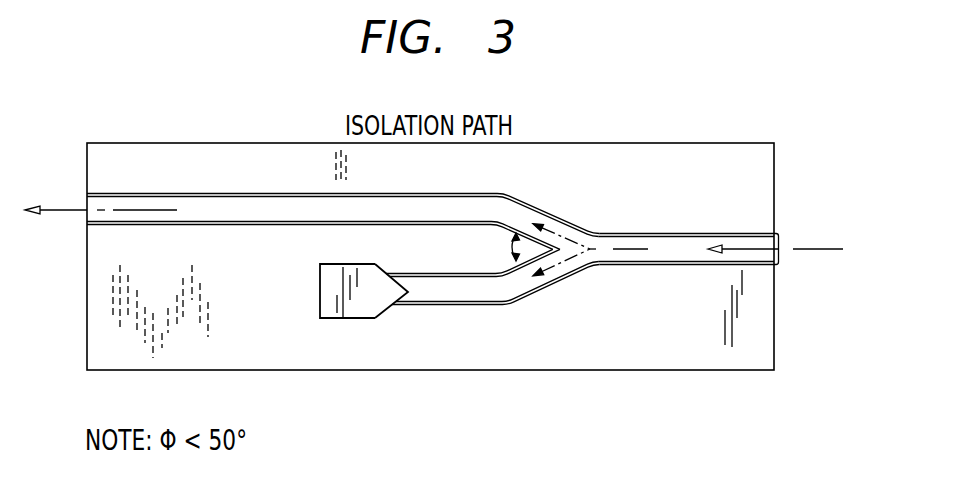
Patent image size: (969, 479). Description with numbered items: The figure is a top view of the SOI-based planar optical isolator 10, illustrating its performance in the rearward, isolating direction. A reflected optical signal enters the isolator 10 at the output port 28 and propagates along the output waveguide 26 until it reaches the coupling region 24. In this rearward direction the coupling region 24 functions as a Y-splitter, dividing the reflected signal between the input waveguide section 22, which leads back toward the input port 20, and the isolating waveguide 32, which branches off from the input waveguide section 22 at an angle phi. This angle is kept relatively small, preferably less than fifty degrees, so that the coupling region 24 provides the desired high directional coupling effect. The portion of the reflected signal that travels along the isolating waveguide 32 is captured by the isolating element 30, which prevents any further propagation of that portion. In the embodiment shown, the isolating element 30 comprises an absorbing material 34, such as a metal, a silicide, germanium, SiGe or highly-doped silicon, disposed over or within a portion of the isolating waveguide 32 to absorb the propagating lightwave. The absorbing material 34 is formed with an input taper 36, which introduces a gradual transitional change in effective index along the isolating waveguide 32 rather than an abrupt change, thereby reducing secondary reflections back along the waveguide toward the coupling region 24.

The optical isolator 10 is at (772, 103).
The input port 20 is at (60, 213).
The input waveguide section 22 is at (230, 208).
The coupling region 24 is at (582, 243).
The output waveguide 26 is at (681, 247).
The output port 28 is at (778, 242).
The isolating element 30 is at (328, 278).
The isolating waveguide 32 is at (523, 287).
The absorbing material 34 is at (318, 305).
The input taper 36 is at (382, 317).